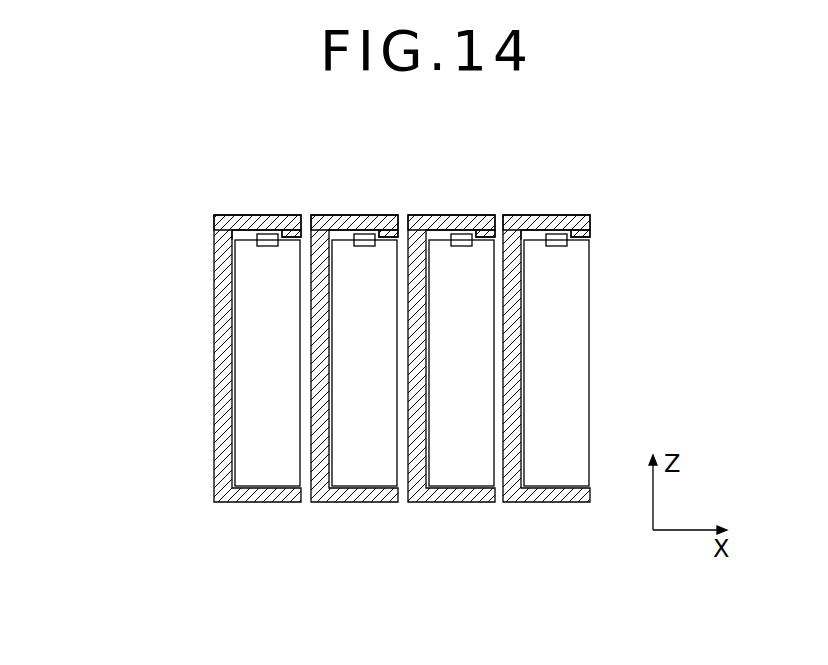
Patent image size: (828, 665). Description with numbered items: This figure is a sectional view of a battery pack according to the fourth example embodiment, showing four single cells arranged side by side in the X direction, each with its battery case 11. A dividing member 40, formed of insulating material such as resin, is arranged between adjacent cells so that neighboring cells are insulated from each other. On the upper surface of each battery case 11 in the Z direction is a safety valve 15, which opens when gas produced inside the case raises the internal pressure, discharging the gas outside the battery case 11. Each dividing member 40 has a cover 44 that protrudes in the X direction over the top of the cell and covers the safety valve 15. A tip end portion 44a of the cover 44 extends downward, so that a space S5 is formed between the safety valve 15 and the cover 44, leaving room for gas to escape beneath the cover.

The dividing member 40 is at (252, 503).
The cover 44 is at (236, 229).
The tip end portion 44a is at (301, 236).
The battery case 11 is at (284, 367).
The safety valve 15 is at (265, 248).
The space S5 is at (247, 238).